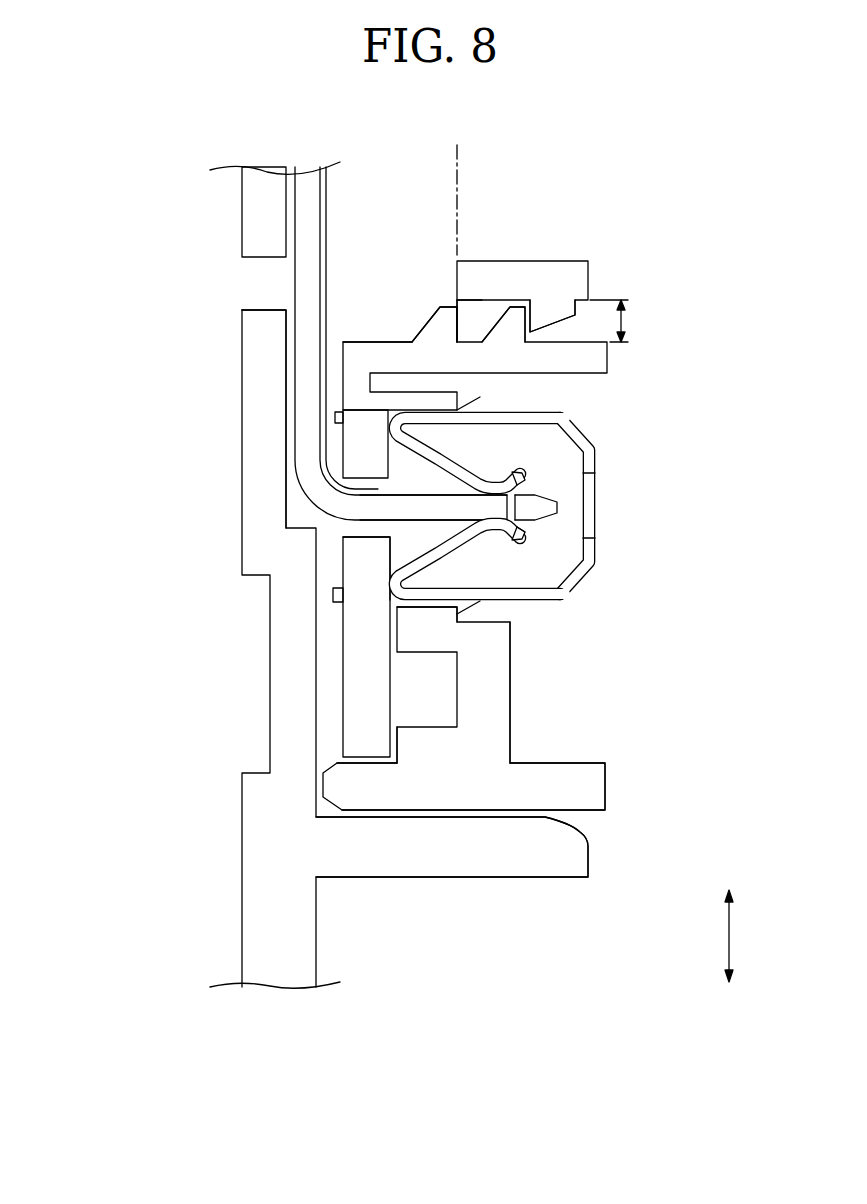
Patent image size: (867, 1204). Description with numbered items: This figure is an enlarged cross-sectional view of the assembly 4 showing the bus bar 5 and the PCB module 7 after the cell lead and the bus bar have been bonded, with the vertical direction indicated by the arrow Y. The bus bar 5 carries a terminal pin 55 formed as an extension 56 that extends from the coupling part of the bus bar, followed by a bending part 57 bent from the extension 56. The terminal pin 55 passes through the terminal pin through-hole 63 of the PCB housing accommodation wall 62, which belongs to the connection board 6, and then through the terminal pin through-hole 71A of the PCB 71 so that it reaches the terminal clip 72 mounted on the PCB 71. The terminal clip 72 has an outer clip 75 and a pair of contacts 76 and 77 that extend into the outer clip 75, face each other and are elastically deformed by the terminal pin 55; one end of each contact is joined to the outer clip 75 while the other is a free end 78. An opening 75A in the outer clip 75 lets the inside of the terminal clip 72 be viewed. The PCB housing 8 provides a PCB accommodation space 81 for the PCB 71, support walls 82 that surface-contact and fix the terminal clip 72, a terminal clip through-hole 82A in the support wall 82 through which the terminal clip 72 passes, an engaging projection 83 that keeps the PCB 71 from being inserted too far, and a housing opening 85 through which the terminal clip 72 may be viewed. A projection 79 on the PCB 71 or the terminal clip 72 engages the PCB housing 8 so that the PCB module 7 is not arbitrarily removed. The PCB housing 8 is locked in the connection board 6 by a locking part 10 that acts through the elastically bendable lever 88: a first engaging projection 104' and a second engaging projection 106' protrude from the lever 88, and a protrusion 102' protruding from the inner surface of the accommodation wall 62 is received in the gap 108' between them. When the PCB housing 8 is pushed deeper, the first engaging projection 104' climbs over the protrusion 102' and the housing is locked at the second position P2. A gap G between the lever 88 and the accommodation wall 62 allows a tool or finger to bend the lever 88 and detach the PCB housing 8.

The refrigerator / appliance assembly 4 is at (112, 170).
The bus bar 5 is at (315, 202).
The connection board 6 is at (252, 933).
The PCB module 7 is at (550, 537).
The PCB housing 8 is at (598, 787).
The locking part 10 is at (343, 314).
The terminal pin 55 is at (557, 507).
The extension 56 is at (310, 433).
The bending part 57 is at (382, 507).
The PCB housing accommodation wall 62 is at (583, 277).
The terminal pin through-hole 63 is at (387, 288).
The PCB 71 is at (362, 747).
The terminal pin through-hole 71A is at (365, 534).
The terminal clip 72 is at (567, 593).
The outer clip 75 is at (578, 573).
The opening 75A is at (592, 530).
The contact 76 is at (499, 477).
The contact 77 is at (530, 522).
The free end 78 is at (523, 541).
The projection 79 is at (480, 398).
The PCB accommodation space 81 is at (382, 765).
The support wall 82 is at (413, 400).
The terminal clip through-hole 82A is at (420, 602).
The engaging projection 83 is at (397, 747).
The housing opening 85 is at (573, 727).
The lever 88 is at (604, 358).
The protrusion 102' is at (552, 273).
The first engaging projection 104' is at (508, 275).
The second engaging projection 106' is at (434, 284).
The gap 108' is at (475, 272).
The gap G is at (616, 321).
The second position P2 is at (456, 185).
The Y direction Y is at (729, 918).